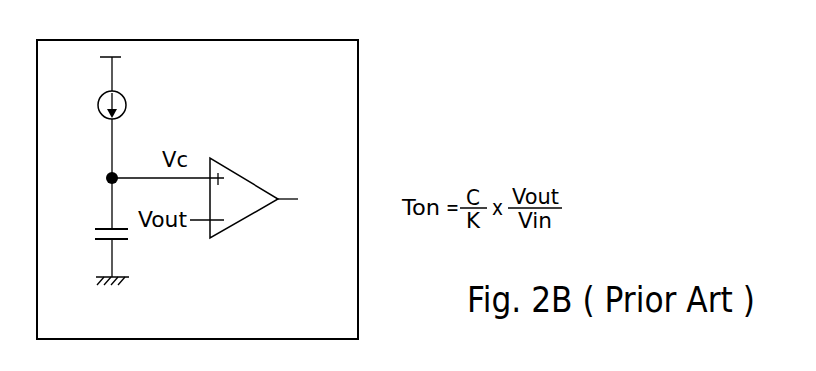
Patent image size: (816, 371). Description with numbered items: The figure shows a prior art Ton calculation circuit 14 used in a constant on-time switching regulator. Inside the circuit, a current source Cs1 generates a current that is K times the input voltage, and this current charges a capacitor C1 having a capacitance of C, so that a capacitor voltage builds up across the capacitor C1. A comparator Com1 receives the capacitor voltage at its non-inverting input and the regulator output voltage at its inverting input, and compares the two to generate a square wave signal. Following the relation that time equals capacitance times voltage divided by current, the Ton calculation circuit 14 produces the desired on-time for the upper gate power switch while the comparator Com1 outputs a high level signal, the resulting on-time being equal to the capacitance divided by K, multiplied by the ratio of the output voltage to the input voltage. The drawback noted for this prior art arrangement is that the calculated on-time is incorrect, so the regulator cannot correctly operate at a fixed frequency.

The Ton calculation circuit 14 is at (345, 323).
The current source Cs1 is at (190, 117).
The capacitor C1 is at (94, 231).
The comparator Com1 is at (239, 174).